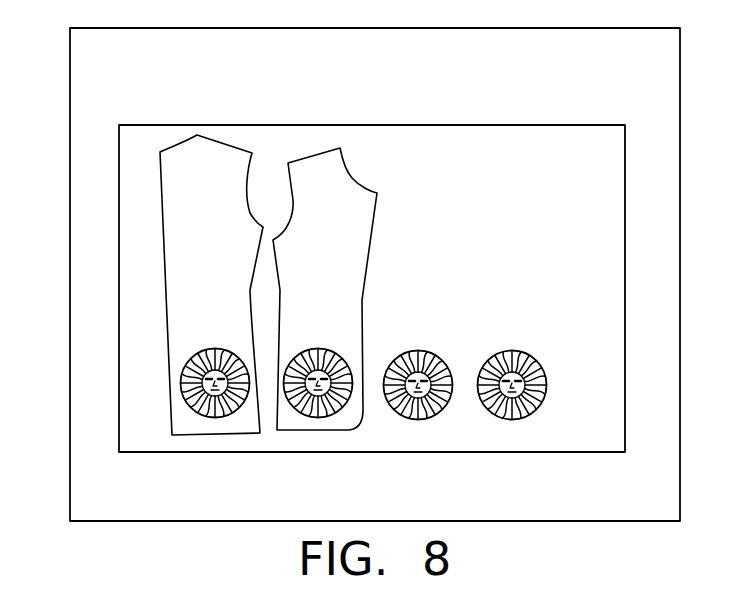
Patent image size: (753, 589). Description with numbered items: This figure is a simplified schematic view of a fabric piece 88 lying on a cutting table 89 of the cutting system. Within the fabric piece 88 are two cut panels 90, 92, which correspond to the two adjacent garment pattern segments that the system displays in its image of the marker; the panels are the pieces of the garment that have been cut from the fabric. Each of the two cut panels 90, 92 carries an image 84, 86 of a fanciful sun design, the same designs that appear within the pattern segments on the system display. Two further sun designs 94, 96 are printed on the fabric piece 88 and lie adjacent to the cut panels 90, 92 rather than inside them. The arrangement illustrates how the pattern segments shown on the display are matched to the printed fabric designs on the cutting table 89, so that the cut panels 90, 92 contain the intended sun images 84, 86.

The cutting table 89 is at (97, 203).
The fabric piece 88 is at (138, 285).
The cut panel 90 is at (202, 175).
The cut panel 92 is at (317, 183).
The image of a fanciful sun design 84 is at (197, 352).
The image of a fanciful sun design 86 is at (303, 352).
The sun design 94 is at (408, 350).
The sun design 96 is at (517, 350).